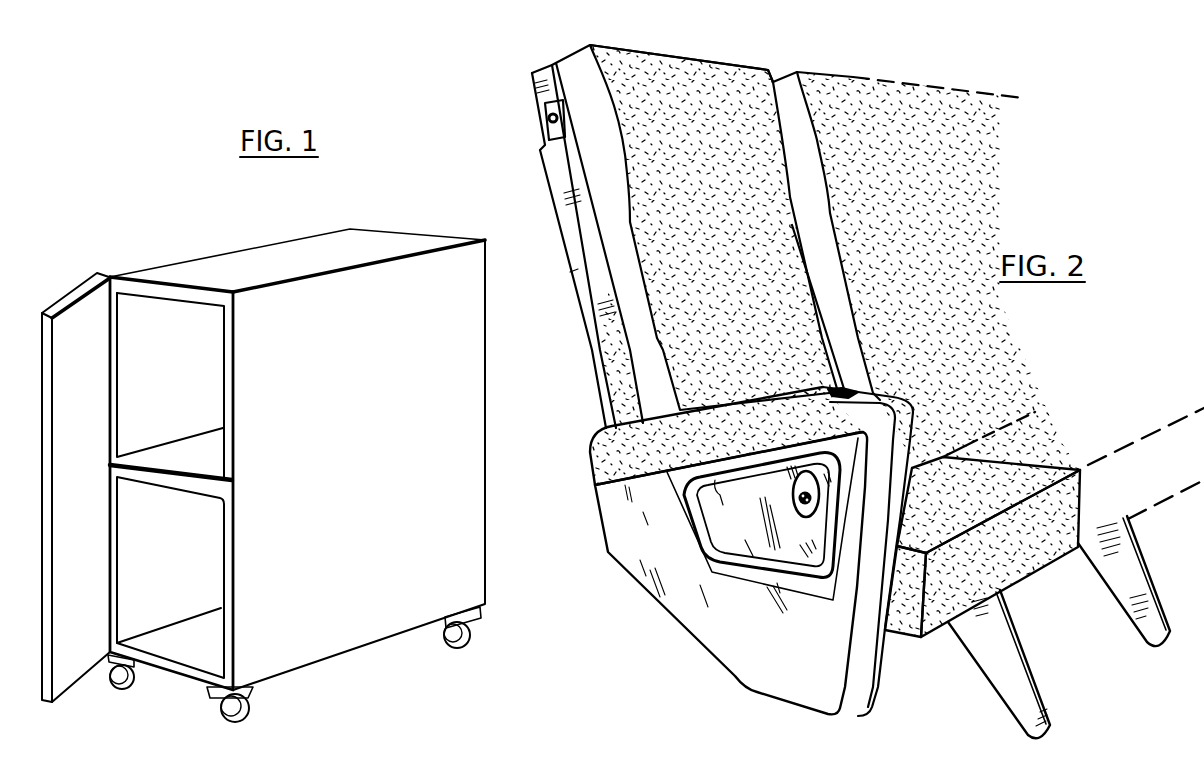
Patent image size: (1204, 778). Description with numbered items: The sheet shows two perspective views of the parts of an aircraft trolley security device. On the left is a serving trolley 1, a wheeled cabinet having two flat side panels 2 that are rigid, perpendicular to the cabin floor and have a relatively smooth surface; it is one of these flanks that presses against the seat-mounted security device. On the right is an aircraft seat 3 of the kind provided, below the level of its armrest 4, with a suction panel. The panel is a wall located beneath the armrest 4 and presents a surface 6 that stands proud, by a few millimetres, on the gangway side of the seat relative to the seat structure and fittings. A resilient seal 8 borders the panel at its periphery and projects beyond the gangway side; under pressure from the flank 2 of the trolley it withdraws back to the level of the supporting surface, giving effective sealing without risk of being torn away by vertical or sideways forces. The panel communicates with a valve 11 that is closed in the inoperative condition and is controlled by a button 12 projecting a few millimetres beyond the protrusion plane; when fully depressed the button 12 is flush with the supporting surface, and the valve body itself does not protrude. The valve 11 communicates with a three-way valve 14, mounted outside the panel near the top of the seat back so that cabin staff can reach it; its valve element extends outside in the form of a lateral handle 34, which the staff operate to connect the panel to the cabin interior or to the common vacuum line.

In FIG. 1, the trolley 1 is at (202, 233).
In FIG. 1, the side panel 2 is at (427, 483).
In FIG. 2, the seat 3 is at (808, 668).
In FIG. 2, the armrest 4 is at (677, 432).
In FIG. 2, the surface 6 is at (797, 507).
In FIG. 2, the resilient seal 8 is at (775, 573).
In FIG. 2, the valve 11 is at (798, 517).
In FIG. 2, the button 12 is at (798, 512).
In FIG. 2, the three-way valve 14 is at (545, 111).
In FIG. 2, the lateral handle 34 is at (547, 123).